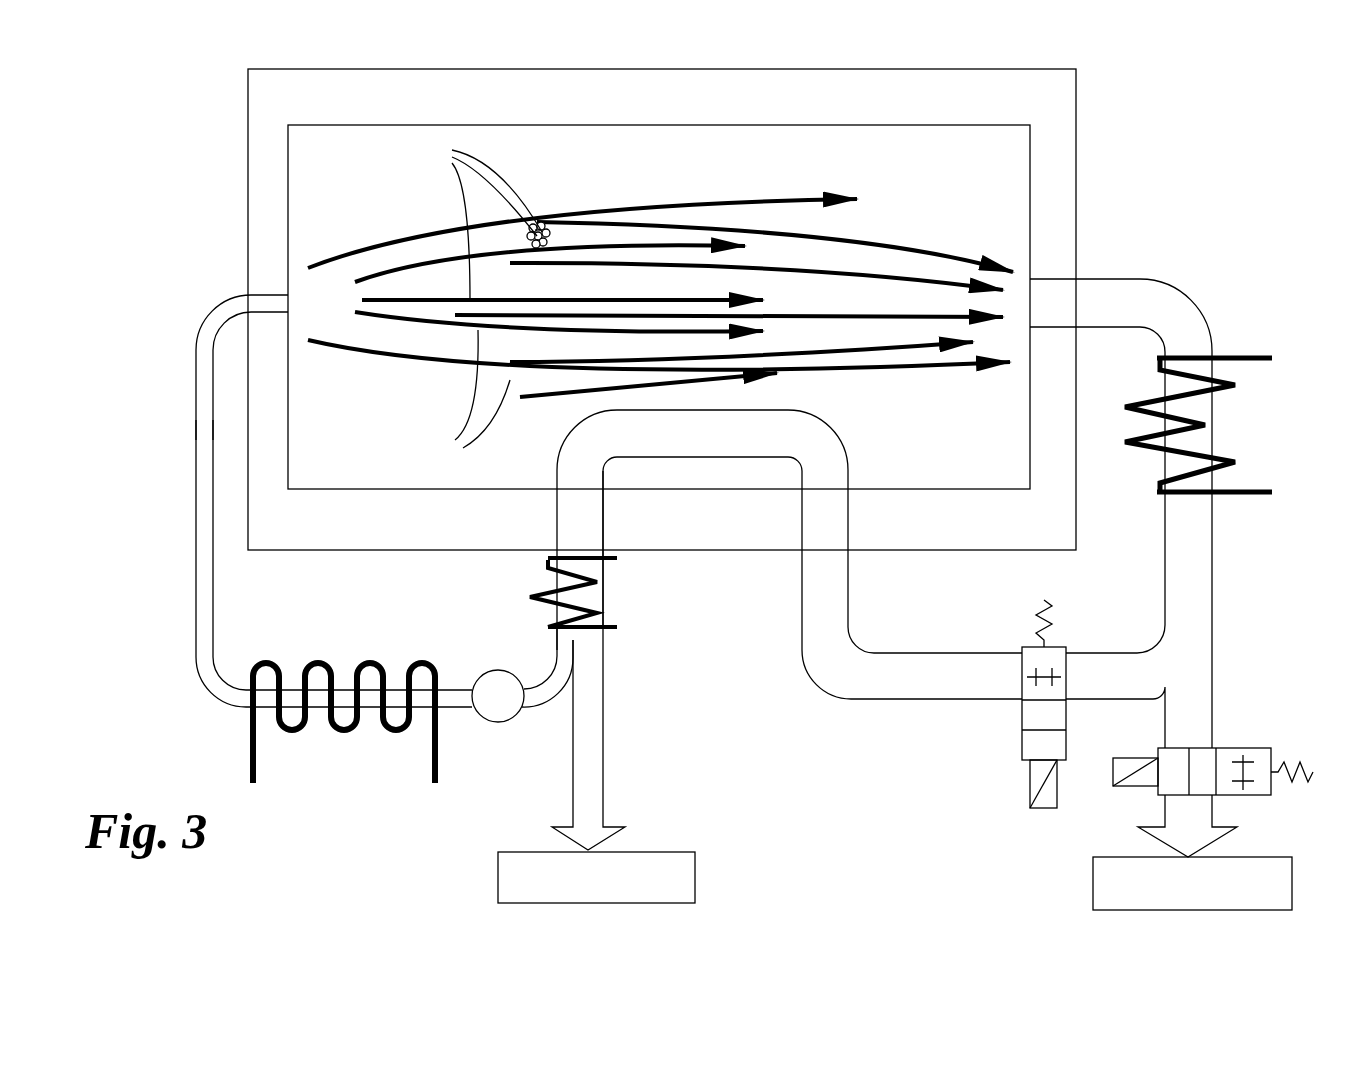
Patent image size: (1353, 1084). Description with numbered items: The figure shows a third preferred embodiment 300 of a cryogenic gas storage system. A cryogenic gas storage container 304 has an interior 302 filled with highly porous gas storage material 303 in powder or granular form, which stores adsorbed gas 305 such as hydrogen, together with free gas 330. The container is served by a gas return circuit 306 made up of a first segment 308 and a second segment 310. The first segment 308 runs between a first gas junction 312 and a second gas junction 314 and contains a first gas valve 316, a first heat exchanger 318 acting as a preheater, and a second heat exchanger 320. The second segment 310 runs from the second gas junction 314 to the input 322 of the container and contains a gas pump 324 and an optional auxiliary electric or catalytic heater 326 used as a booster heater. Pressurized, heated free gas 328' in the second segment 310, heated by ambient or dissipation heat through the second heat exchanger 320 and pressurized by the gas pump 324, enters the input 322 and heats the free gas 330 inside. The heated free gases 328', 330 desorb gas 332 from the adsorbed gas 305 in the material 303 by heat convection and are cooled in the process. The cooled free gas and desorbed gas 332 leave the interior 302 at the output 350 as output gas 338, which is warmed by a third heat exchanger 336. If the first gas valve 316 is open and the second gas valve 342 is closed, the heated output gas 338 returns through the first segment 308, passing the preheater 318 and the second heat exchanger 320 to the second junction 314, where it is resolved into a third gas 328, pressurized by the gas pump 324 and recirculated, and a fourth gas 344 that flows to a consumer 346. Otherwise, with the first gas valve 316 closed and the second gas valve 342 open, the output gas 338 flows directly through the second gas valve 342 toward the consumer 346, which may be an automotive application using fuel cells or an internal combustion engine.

The third preferred embodiment 300 is at (232, 128).
The interior 302 is at (995, 205).
The highly porous gas storage material 303 is at (538, 226).
The cryogenic gas storage container 304 is at (1078, 190).
The adsorbed gas 305 is at (535, 230).
The gas return circuit 306 is at (222, 603).
The first segment 308 is at (808, 680).
The second segment 310 is at (228, 293).
The first gas junction 312 is at (1163, 695).
The second gas junction 314 is at (568, 680).
The first gas valve 316 is at (1020, 745).
The first heat exchanger 318 is at (820, 415).
The second heat exchanger 320 is at (530, 582).
The input 322 is at (288, 296).
The gas pump 324 is at (495, 722).
The auxiliary heater 326 is at (258, 748).
The third gas 328 is at (1200, 460).
The pressurized, heated free gas 328' is at (280, 550).
The free gas 330 is at (432, 301).
The desorbed gas 332 is at (893, 270).
The third heat exchanger 336 is at (1248, 492).
The output gas 338 is at (617, 573).
The second gas valve 342 is at (1252, 797).
The fourth gas 344 is at (617, 725).
The consumer 346 is at (498, 870).
The output 350 is at (1032, 282).